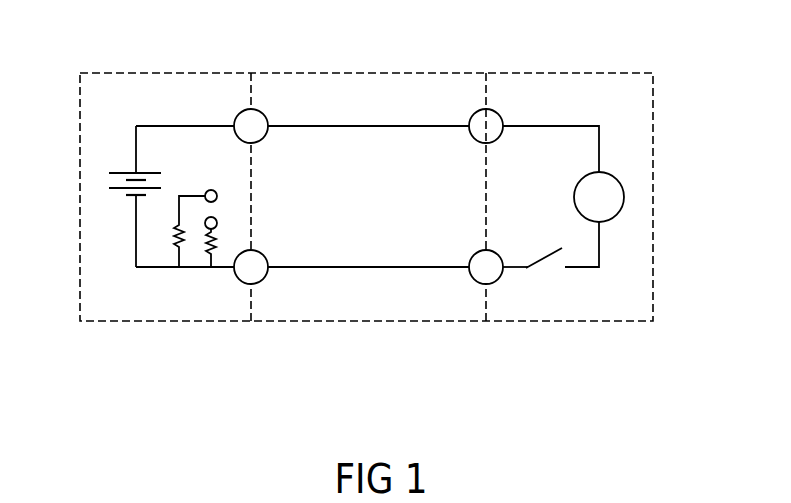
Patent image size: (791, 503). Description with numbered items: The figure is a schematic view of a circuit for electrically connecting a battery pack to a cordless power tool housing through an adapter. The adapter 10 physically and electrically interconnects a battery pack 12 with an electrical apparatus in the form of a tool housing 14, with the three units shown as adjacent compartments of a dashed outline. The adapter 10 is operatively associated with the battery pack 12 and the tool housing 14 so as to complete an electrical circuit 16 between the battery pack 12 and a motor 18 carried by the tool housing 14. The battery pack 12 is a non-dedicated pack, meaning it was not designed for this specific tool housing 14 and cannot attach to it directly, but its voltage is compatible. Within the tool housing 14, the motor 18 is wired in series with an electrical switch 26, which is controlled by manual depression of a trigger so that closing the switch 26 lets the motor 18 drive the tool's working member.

The adapter 10 is at (411, 324).
The battery pack 12 is at (199, 324).
The tool housing 14 is at (541, 324).
The electrical circuit 16 is at (551, 116).
The motor 18 is at (618, 176).
The electrical switch 26 is at (545, 258).